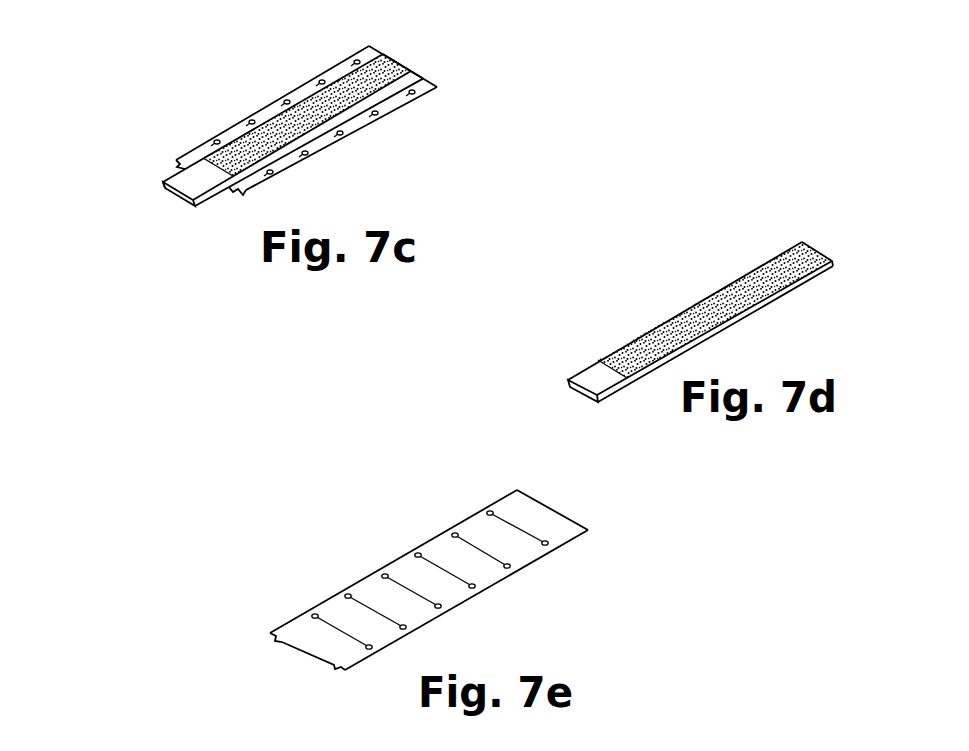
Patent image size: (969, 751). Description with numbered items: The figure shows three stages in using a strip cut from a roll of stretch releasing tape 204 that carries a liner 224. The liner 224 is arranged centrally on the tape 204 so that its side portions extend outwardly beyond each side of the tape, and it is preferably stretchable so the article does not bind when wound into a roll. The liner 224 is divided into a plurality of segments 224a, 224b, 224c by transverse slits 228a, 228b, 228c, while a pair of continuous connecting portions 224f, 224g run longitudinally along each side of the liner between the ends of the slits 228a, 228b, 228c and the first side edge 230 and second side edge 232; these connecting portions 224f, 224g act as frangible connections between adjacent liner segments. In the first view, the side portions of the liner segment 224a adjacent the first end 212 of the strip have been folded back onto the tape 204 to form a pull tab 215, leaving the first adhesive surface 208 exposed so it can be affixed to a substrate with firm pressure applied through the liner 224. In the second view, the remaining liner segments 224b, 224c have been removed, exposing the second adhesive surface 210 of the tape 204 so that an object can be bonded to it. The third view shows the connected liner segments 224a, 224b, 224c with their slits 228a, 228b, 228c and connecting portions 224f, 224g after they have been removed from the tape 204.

In FIG. 7c, the stretch releasing tape 204 is at (249, 125).
In FIG. 7d, the stretch releasing tape 204 is at (694, 322).
In FIG. 7c, the first adhesive surface 208 is at (273, 135).
In FIG. 7d, the second adhesive surface 210 is at (778, 294).
In FIG. 7c, the first end 212 is at (182, 196).
In FIG. 7c, the pull tab 215 is at (153, 177).
In FIG. 7d, the pull tab 215 is at (583, 375).
In FIG. 7e, the liner 224 is at (382, 581).
In FIG. 7c, the liner segment 224a is at (204, 199).
In FIG. 7e, the liner segment 224a is at (292, 633).
In FIG. 7c, the liner segment 224b is at (188, 155).
In FIG. 7e, the liner segment 224b is at (335, 612).
In FIG. 7e, the liner segment 224c is at (372, 588).
In FIG. 7e, the connecting portion 224f is at (418, 553).
In FIG. 7e, the connecting portion 224g is at (498, 583).
In FIG. 7e, the transverse slit 228a is at (337, 632).
In FIG. 7c, the transverse slit 228b is at (222, 140).
In FIG. 7e, the transverse slit 228b is at (385, 617).
In FIG. 7e, the transverse slit 228c is at (423, 597).
In FIG. 7e, the first side edge 230 is at (397, 558).
In FIG. 7e, the second side edge 232 is at (464, 603).